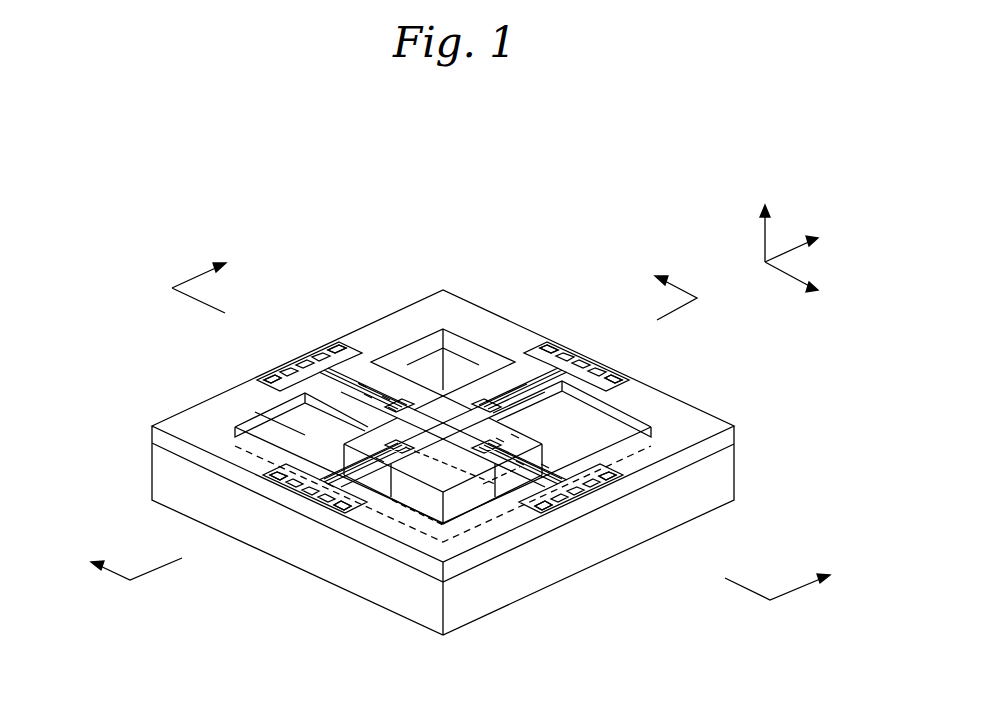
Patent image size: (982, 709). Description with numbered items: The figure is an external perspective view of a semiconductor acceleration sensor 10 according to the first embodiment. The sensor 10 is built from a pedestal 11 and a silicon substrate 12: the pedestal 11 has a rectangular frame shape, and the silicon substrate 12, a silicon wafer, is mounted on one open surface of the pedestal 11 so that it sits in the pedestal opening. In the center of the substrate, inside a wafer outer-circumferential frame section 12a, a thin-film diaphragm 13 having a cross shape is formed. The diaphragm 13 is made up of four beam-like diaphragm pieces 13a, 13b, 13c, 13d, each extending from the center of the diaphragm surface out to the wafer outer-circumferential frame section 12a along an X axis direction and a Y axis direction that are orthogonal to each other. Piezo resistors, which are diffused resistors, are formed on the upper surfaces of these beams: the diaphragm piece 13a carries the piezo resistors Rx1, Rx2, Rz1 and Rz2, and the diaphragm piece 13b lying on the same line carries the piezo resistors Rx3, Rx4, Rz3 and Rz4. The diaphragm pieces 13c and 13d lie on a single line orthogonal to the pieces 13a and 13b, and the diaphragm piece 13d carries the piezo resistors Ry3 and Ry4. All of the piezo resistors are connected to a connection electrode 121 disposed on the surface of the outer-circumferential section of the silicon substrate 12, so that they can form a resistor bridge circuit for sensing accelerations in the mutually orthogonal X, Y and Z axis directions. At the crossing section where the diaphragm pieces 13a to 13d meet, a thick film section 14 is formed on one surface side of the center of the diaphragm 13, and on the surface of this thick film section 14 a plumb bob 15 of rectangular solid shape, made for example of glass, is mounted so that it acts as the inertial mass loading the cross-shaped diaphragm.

The semiconductor acceleration sensor 10 is at (259, 203).
The pedestal 11 is at (723, 483).
The silicon substrate 12 is at (147, 436).
The wafer outer-circumferential frame section 12a is at (207, 452).
The diaphragm 13 is at (450, 443).
The diaphragm piece 13a is at (587, 473).
The diaphragm piece 13b is at (337, 362).
The diaphragm piece 13c is at (533, 375).
The diaphragm piece 13d is at (287, 487).
The thick film section 14 is at (507, 438).
The plumb bob 15 is at (417, 497).
The connection electrode 121 is at (305, 364).
The piezo resistor Rx1 is at (545, 466).
The piezo resistor Rx2 is at (515, 436).
The piezo resistor Rx3 is at (392, 410).
The piezo resistor Rx4 is at (368, 397).
The piezo resistor Ry3 is at (380, 460).
The piezo resistor Ry4 is at (330, 485).
The piezo resistor Rz1 is at (520, 463).
The piezo resistor Rz2 is at (500, 440).
The piezo resistor Rz3 is at (387, 400).
The piezo resistor Rz4 is at (363, 387).